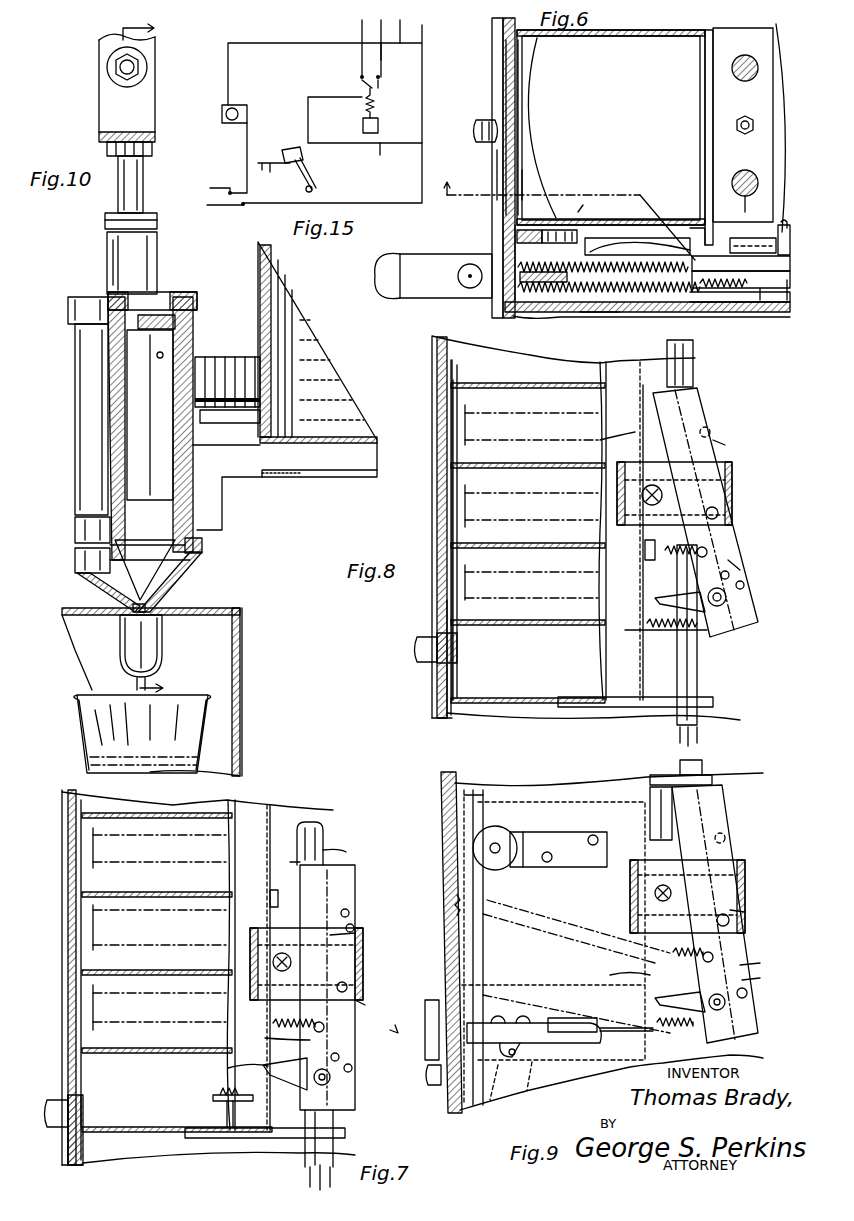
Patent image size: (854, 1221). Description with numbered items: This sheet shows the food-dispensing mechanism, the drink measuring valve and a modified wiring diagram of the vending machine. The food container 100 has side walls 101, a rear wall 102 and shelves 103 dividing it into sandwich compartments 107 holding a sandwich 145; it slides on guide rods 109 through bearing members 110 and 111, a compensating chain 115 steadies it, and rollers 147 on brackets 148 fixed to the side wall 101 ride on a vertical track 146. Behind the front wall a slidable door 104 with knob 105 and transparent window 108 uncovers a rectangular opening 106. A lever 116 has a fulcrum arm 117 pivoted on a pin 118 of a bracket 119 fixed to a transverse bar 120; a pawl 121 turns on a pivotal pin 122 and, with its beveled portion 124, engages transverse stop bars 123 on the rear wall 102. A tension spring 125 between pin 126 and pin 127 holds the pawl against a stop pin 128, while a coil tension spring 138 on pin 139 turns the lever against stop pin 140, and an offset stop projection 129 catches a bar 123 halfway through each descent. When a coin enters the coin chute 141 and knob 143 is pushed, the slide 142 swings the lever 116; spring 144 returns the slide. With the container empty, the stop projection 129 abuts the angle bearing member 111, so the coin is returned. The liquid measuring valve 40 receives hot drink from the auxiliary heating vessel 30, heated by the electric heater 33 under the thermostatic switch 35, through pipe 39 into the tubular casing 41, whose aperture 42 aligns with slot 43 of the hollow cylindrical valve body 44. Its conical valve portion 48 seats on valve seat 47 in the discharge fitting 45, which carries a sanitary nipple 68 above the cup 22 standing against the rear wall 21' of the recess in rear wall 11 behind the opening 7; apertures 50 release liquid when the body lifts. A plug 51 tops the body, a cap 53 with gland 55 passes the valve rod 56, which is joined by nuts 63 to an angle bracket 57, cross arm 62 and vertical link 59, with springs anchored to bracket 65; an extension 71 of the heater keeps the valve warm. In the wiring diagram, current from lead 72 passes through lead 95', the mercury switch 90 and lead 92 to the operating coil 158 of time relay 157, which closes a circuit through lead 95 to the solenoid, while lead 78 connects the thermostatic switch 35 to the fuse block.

In FIG. 6, the central rectangular opening 7 is at (617, 242).
In FIG. 10, the rear wall of casing member 11 is at (148, 361).
In FIG. 10, the rear wall of recess 21' is at (175, 692).
In FIG. 10, the cup 22 is at (206, 728).
In FIG. 10, the auxiliary heating vessel 30 is at (258, 252).
In FIG. 10, the electric heater 33 is at (330, 468).
In FIG. 15, the electric heater 33 is at (215, 188).
In FIG. 15, the thermostatic switch 35 is at (236, 103).
In FIG. 10, the pipe 39 is at (208, 423).
In FIG. 10, the liquid measuring valve 40 is at (68, 325).
In FIG. 10, the tubular casing 41 is at (75, 448).
In FIG. 10, the aperture 42 is at (200, 357).
In FIG. 10, the slot 43 is at (160, 387).
In FIG. 10, the hollow cylindrical valve body 44 is at (193, 335).
In FIG. 10, the discharge fitting 45 is at (190, 565).
In FIG. 10, the valve seat 47 is at (145, 608).
In FIG. 10, the conical valve portion 48 is at (170, 585).
In FIG. 10, the apertures 50 is at (202, 545).
In FIG. 10, the plug 51 is at (197, 296).
In FIG. 10, the cap 53 is at (157, 270).
In FIG. 10, the gland 55 is at (157, 221).
In FIG. 10, the valve rod 56 is at (143, 190).
In FIG. 10, the angle bracket 57 is at (155, 114).
In FIG. 10, the vertical link 59 is at (157, 45).
In FIG. 10, the cross arm 62 is at (155, 137).
In FIG. 10, the nuts 63 is at (152, 150).
In FIG. 10, the bracket 65 is at (75, 535).
In FIG. 10, the sanitary non-metallic nipple 68 is at (162, 660).
In FIG. 10, the extension 71 is at (222, 505).
In FIG. 15, the lead 72 is at (422, 30).
In FIG. 15, the lead 78 is at (396, 54).
In FIG. 15, the mercury switch 90 is at (292, 146).
In FIG. 15, the lead 92 is at (390, 65).
In FIG. 15, the lead 95 is at (366, 48).
In FIG. 15, the lead 95' is at (358, 157).
In FIG. 6, the food container 100 is at (492, 55).
In FIG. 8, the food container 100 is at (432, 418).
In FIG. 7, the food container 100 is at (62, 882).
In FIG. 9, the food container 100 is at (555, 785).
In FIG. 6, the side walls 101 is at (618, 30).
In FIG. 8, the side walls 101 is at (555, 352).
In FIG. 7, the side walls 101 is at (240, 805).
In FIG. 6, the rear wall 102 is at (710, 28).
In FIG. 8, the rear wall 102 is at (630, 360).
In FIG. 7, the rear wall 102 is at (270, 805).
In FIG. 6, the shelves 103 is at (520, 175).
In FIG. 8, the shelves 103 is at (465, 410).
In FIG. 7, the shelves 103 is at (93, 895).
In FIG. 9, the shelves 103 is at (509, 1095).
In FIG. 6, the vertically slidable door 104 is at (495, 155).
In FIG. 8, the vertically slidable door 104 is at (437, 670).
In FIG. 7, the vertically slidable door 104 is at (93, 1000).
In FIG. 6, the knob 105 is at (476, 131).
In FIG. 8, the knob 105 is at (417, 650).
In FIG. 7, the knob 105 is at (47, 1110).
In FIG. 9, the knob 105 is at (428, 1085).
In FIG. 8, the rectangular opening 106 is at (437, 622).
In FIG. 7, the rectangular opening 106 is at (81, 1060).
In FIG. 6, the sandwich compartment 107 is at (517, 70).
In FIG. 8, the sandwich compartment 107 is at (452, 508).
In FIG. 9, the sandwich compartment 107 is at (548, 1090).
In FIG. 6, the transparent window 108 is at (503, 90).
In FIG. 8, the transparent window 108 is at (437, 603).
In FIG. 7, the transparent window 108 is at (68, 1032).
In FIG. 6, the guide rods 109 is at (773, 35).
In FIG. 8, the guide rods 109 is at (693, 365).
In FIG. 7, the guide rods 109 is at (323, 840).
In FIG. 9, the guide rods 109 is at (702, 765).
In FIG. 8, the lower bearing member 110 is at (713, 700).
In FIG. 7, the lower bearing member 110 is at (345, 1133).
In FIG. 9, the upper bearing member 111 is at (712, 779).
In FIG. 8, the compensating chain 115 is at (680, 740).
In FIG. 7, the compensating chain 115 is at (310, 1185).
In FIG. 6, the lever 116 is at (741, 306).
In FIG. 8, the lever 116 is at (712, 410).
In FIG. 7, the lever 116 is at (355, 893).
In FIG. 9, the lever 116 is at (725, 808).
In FIG. 6, the fulcrum arm 117 is at (760, 300).
In FIG. 8, the fulcrum arm 117 is at (727, 445).
In FIG. 7, the fulcrum arm 117 is at (358, 935).
In FIG. 9, the fulcrum arm 117 is at (745, 912).
In FIG. 6, the pin 118 is at (720, 293).
In FIG. 8, the pin 118 is at (662, 495).
In FIG. 7, the pin 118 is at (291, 962).
In FIG. 9, the pin 118 is at (671, 893).
In FIG. 8, the bracket 119 is at (732, 470).
In FIG. 7, the bracket 119 is at (363, 980).
In FIG. 9, the bracket 119 is at (745, 865).
In FIG. 6, the transverse bar 120 is at (580, 316).
In FIG. 6, the pawl 121 is at (682, 231).
In FIG. 8, the pawl 121 is at (675, 596).
In FIG. 7, the pawl 121 is at (367, 1102).
In FIG. 9, the pawl 121 is at (766, 961).
In FIG. 6, the pivotal pin 122 is at (761, 206).
In FIG. 8, the pivotal pin 122 is at (726, 600).
In FIG. 7, the pivotal pin 122 is at (330, 1080).
In FIG. 9, the pivotal pin 122 is at (725, 1005).
In FIG. 6, the transverse stop bars 123 is at (754, 128).
In FIG. 8, the transverse stop bars 123 is at (600, 418).
In FIG. 7, the transverse stop bars 123 is at (230, 912).
In FIG. 9, the transverse stop bars 123 is at (430, 1005).
In FIG. 8, the beveled portion 124 is at (705, 612).
In FIG. 7, the beveled portion 124 is at (300, 1066).
In FIG. 9, the beveled portion 124 is at (707, 1045).
In FIG. 8, the tension spring 125 is at (730, 573).
In FIG. 7, the tension spring 125 is at (355, 927).
In FIG. 9, the tension spring 125 is at (745, 940).
In FIG. 8, the pin 126 is at (712, 430).
In FIG. 7, the pin 126 is at (350, 911).
In FIG. 9, the pin 126 is at (727, 836).
In FIG. 8, the pin 127 is at (745, 585).
In FIG. 7, the pin 127 is at (353, 1068).
In FIG. 9, the pin 127 is at (748, 993).
In FIG. 6, the stop pin 128 is at (754, 236).
In FIG. 8, the stop pin 128 is at (742, 558).
In FIG. 7, the stop pin 128 is at (365, 1005).
In FIG. 9, the stop pin 128 is at (767, 976).
In FIG. 6, the offset stop projection 129 is at (700, 210).
In FIG. 8, the offset stop projection 129 is at (599, 437).
In FIG. 7, the offset stop projection 129 is at (333, 852).
In FIG. 9, the offset stop projection 129 is at (640, 778).
In FIG. 6, the coil tension spring 138 is at (520, 318).
In FIG. 8, the coil tension spring 138 is at (707, 552).
In FIG. 7, the coil tension spring 138 is at (273, 1023).
In FIG. 9, the coil tension spring 138 is at (555, 895).
In FIG. 8, the pin 139 is at (678, 582).
In FIG. 7, the pin 139 is at (275, 1035).
In FIG. 8, the stop pin 140 is at (718, 513).
In FIG. 7, the stop pin 140 is at (347, 987).
In FIG. 9, the stop pin 140 is at (729, 920).
In FIG. 6, the coin chute 141 is at (517, 240).
In FIG. 9, the coin chute 141 is at (427, 1004).
In FIG. 6, the slide 142 is at (520, 262).
In FIG. 7, the slide 142 is at (227, 1112).
In FIG. 9, the slide 142 is at (630, 1075).
In FIG. 6, the knob 143 is at (395, 255).
In FIG. 9, the knob 143 is at (402, 1021).
In FIG. 6, the tension spring 144 is at (600, 240).
In FIG. 7, the tension spring 144 is at (213, 1098).
In FIG. 9, the tension spring 144 is at (640, 1010).
In FIG. 6, the sandwich 145 is at (517, 222).
In FIG. 8, the sandwich 145 is at (451, 386).
In FIG. 7, the sandwich 145 is at (82, 850).
In FIG. 6, the vertical track 146 is at (515, 235).
In FIG. 9, the vertical track 146 is at (462, 808).
In FIG. 6, the rollers 147 is at (596, 203).
In FIG. 9, the rollers 147 is at (475, 848).
In FIG. 9, the brackets 148 is at (560, 832).
In FIG. 15, the time relay 157 is at (353, 83).
In FIG. 15, the operating coil 158 is at (362, 112).